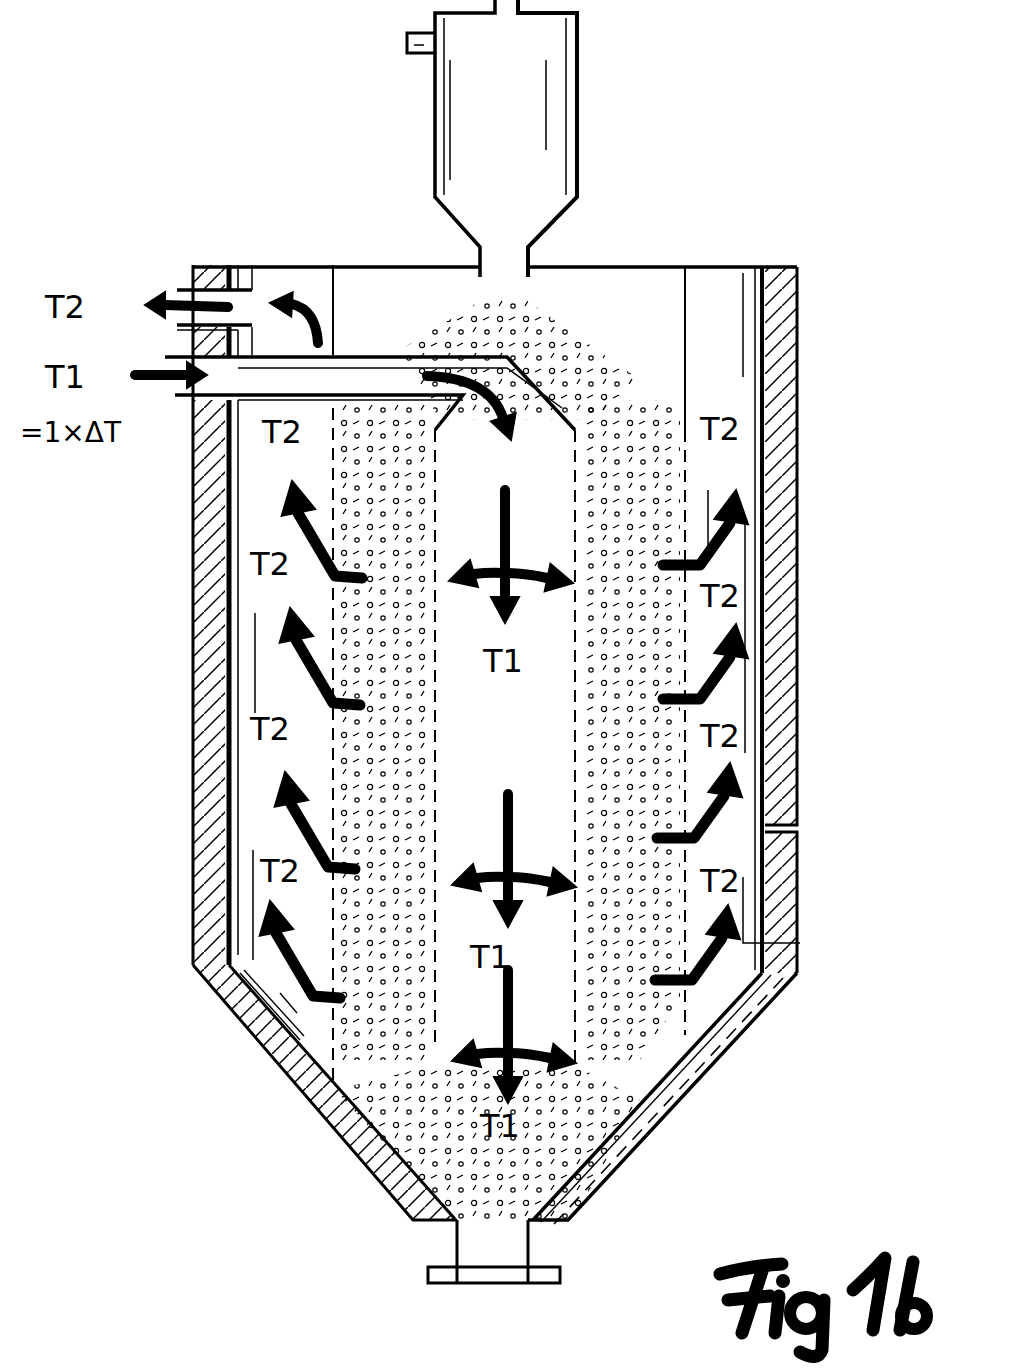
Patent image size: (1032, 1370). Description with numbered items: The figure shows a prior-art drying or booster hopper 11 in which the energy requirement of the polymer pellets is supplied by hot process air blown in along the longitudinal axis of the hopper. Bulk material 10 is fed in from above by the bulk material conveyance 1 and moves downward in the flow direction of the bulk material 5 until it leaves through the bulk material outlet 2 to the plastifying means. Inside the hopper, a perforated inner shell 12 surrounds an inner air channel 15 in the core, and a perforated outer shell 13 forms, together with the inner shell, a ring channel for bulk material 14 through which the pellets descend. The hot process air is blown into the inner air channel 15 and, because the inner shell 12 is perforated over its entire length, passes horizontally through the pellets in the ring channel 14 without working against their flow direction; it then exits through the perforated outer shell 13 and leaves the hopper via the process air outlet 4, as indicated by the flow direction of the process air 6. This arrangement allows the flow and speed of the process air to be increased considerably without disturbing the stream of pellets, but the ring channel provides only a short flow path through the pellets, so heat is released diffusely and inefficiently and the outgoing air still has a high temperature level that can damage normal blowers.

The bulk material conveyance 1 is at (513, 217).
The bulk material outlet 2 is at (477, 1247).
The process air outlet 4 is at (181, 297).
The flow direction of the bulk material 5 is at (505, 1283).
The flow direction of the process air 6 is at (727, 542).
The bulk material 10 is at (741, 360).
The drying or booster hopper 11 is at (763, 1007).
The perforated inner shell 12 is at (430, 750).
The perforated outer shell 13 is at (320, 937).
The ring channel for bulk material 14 is at (615, 830).
The inner air channel 15 is at (355, 422).